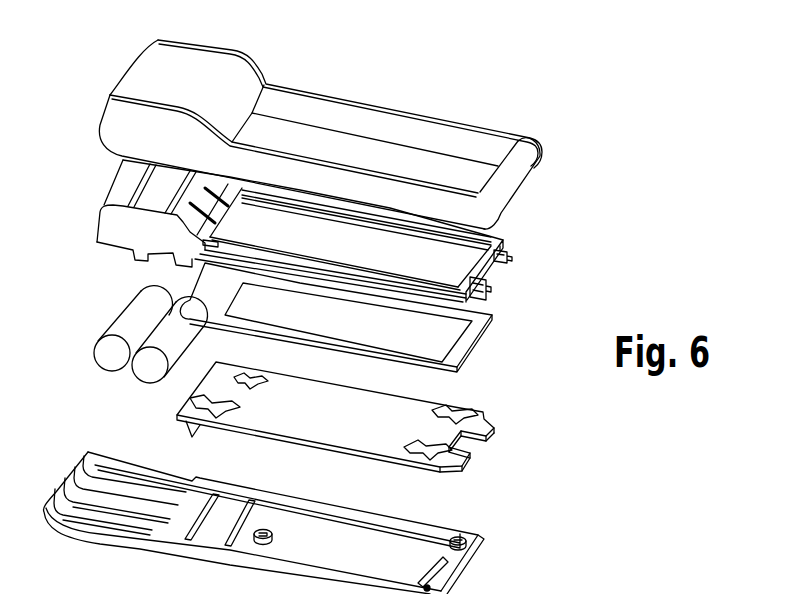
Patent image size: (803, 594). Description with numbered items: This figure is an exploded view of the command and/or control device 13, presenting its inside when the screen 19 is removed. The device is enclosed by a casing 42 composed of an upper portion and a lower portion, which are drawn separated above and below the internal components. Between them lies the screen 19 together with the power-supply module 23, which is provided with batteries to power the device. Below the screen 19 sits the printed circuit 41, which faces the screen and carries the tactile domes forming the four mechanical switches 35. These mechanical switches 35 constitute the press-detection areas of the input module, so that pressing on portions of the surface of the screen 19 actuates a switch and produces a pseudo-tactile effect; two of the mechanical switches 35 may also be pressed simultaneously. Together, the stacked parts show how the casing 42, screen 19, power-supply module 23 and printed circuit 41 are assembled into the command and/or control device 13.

The command and/or control device 13 is at (482, 118).
The screen 19 is at (484, 280).
The power-supply module 23 is at (121, 318).
The mechanical switches 35 is at (197, 394).
The printed circuit 41 is at (465, 455).
The casing 42 is at (178, 72).